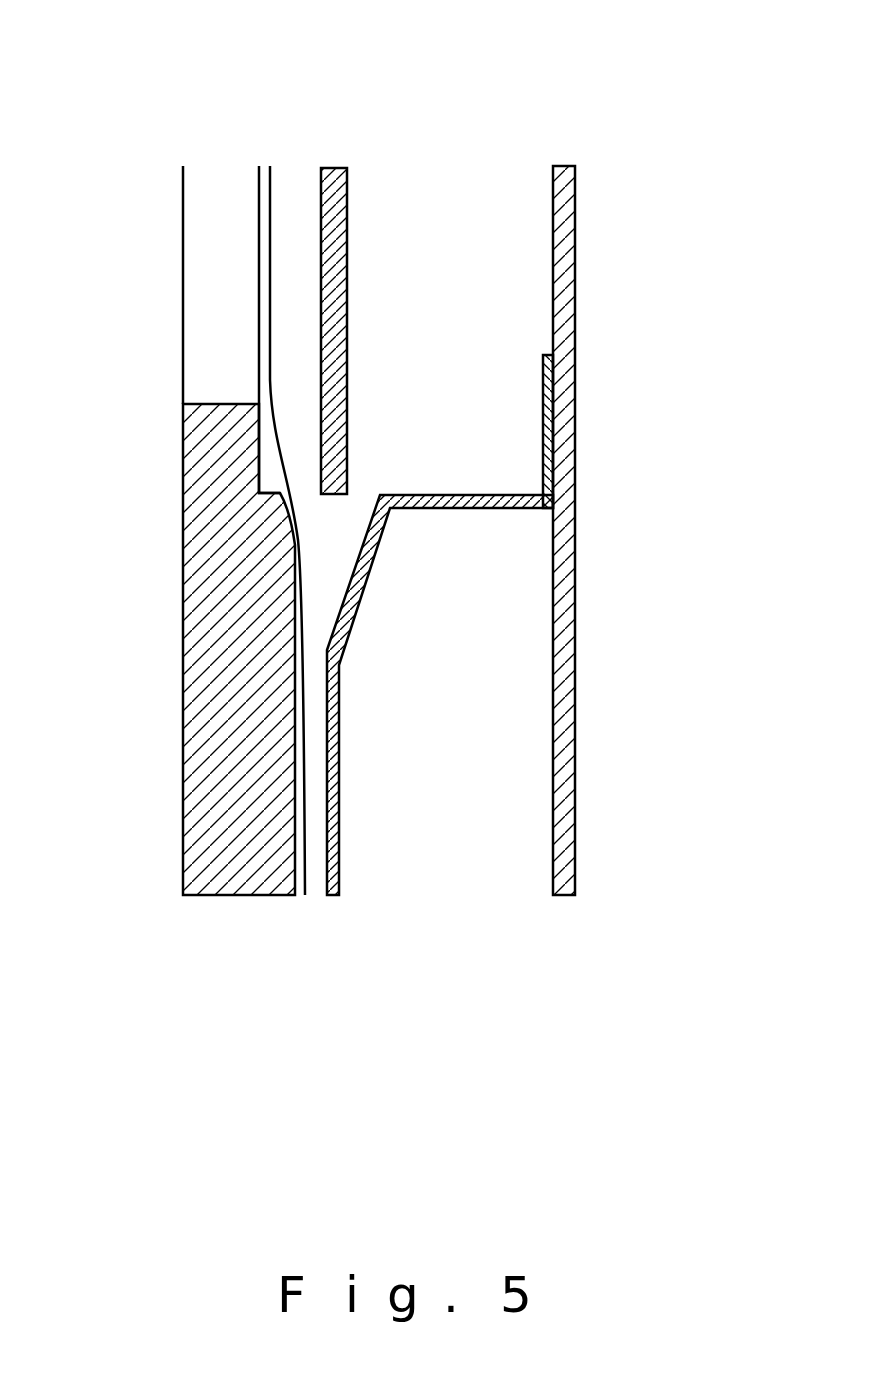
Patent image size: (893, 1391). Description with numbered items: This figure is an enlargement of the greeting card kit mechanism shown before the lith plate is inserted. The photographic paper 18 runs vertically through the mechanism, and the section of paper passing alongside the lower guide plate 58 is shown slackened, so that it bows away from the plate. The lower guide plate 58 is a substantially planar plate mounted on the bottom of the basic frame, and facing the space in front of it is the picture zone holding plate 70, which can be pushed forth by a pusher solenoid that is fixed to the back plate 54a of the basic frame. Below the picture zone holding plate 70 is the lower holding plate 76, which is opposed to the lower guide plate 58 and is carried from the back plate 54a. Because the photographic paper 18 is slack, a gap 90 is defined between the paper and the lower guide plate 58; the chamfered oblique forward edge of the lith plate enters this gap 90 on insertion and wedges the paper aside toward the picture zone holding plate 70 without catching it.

The photographic paper 18 is at (310, 865).
The back plate 54a is at (563, 262).
The lower guide plate 58 is at (215, 722).
The picture zone holding plate 70 is at (347, 300).
The lower holding plate 76 is at (472, 508).
The gap 90 is at (272, 470).